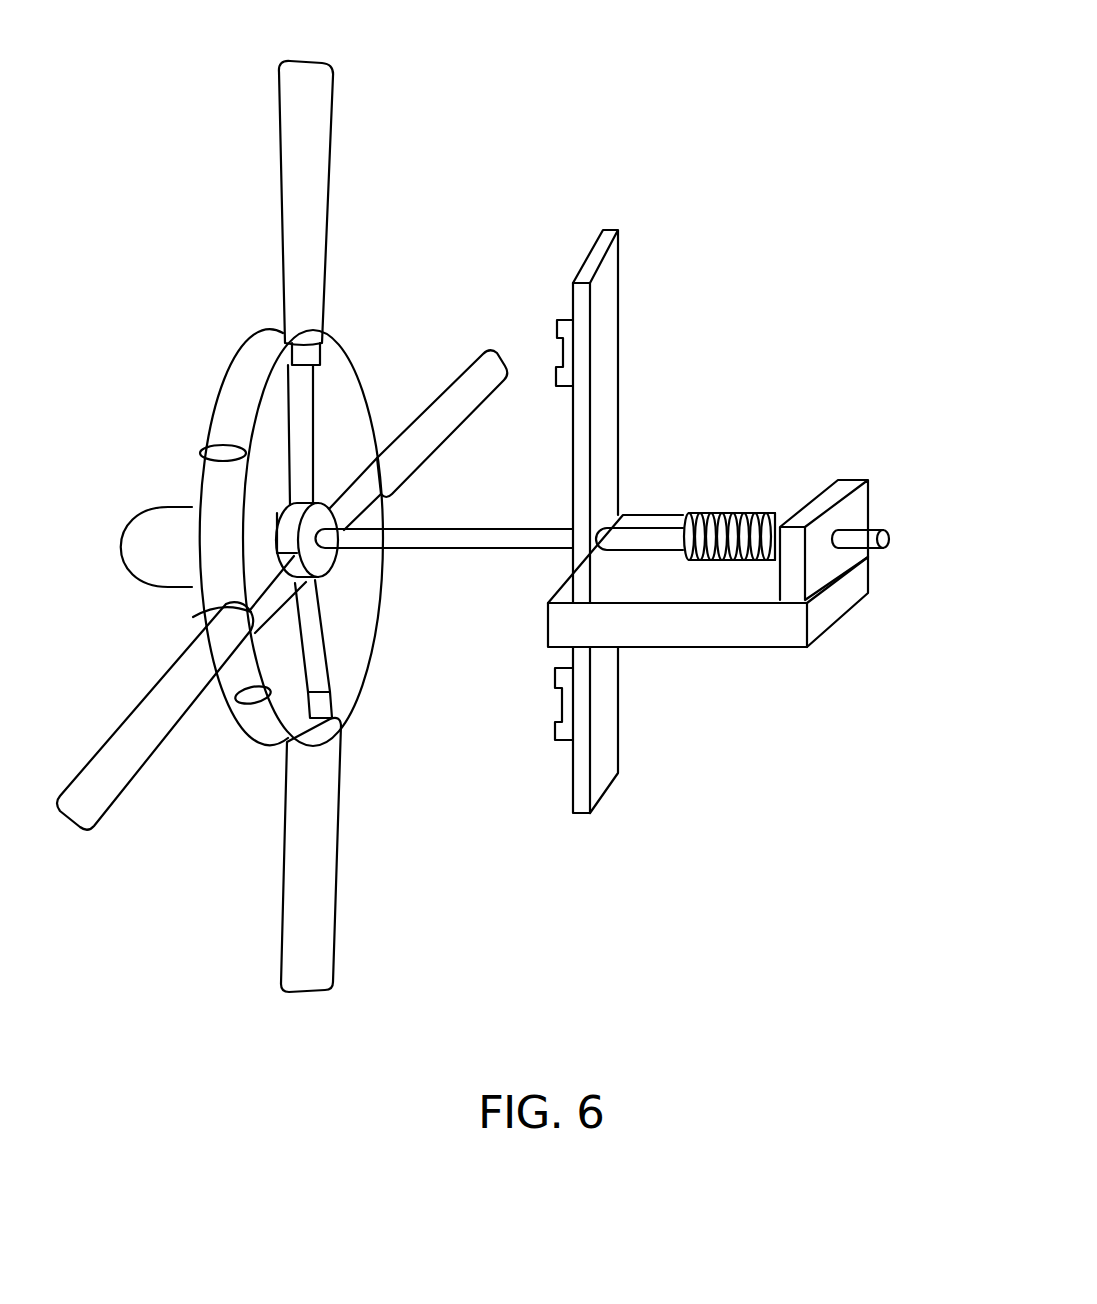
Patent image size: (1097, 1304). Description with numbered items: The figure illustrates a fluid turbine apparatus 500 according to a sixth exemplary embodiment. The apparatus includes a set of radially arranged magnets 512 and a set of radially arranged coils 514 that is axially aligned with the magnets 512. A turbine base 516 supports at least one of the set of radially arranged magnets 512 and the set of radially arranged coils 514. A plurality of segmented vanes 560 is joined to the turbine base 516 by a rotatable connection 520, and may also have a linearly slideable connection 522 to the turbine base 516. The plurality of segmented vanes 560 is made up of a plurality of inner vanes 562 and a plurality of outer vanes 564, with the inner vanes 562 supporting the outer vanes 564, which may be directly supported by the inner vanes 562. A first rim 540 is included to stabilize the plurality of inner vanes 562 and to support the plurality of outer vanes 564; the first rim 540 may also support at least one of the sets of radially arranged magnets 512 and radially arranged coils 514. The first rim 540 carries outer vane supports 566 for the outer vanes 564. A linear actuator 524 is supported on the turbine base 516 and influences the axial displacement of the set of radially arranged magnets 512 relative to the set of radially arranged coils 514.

The fluid turbine apparatus 500 is at (779, 104).
The set of radially arranged magnets 512 is at (316, 356).
The set of radially arranged coils 514 is at (560, 318).
The turbine base 516 is at (770, 622).
The rotatable connection 520 is at (458, 528).
The linearly slideable connection 522 is at (842, 525).
The linear actuator 524 is at (730, 513).
The first rim 540 is at (245, 383).
The plurality of segmented vanes 560 is at (270, 262).
The plurality of inner vanes 562 is at (312, 632).
The plurality of outer vanes 564 is at (313, 866).
The outer vane supports 566 is at (225, 456).